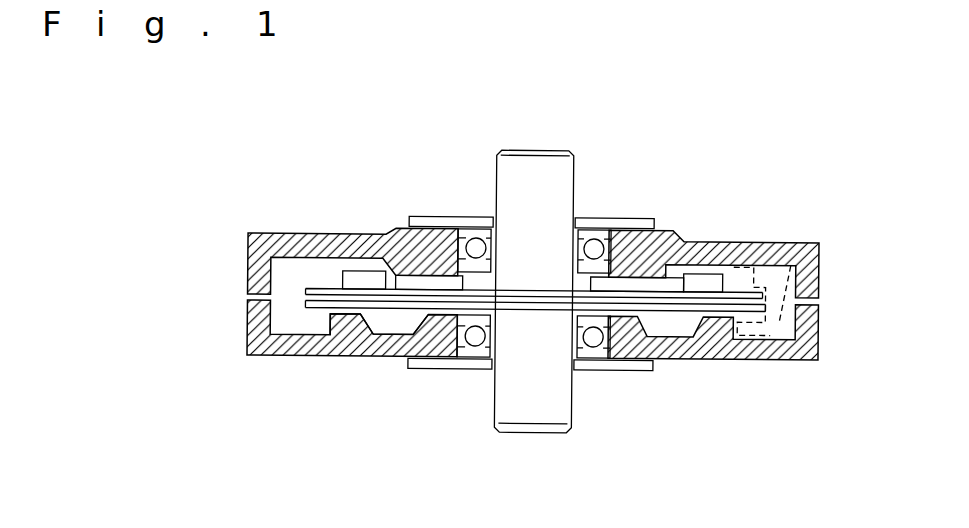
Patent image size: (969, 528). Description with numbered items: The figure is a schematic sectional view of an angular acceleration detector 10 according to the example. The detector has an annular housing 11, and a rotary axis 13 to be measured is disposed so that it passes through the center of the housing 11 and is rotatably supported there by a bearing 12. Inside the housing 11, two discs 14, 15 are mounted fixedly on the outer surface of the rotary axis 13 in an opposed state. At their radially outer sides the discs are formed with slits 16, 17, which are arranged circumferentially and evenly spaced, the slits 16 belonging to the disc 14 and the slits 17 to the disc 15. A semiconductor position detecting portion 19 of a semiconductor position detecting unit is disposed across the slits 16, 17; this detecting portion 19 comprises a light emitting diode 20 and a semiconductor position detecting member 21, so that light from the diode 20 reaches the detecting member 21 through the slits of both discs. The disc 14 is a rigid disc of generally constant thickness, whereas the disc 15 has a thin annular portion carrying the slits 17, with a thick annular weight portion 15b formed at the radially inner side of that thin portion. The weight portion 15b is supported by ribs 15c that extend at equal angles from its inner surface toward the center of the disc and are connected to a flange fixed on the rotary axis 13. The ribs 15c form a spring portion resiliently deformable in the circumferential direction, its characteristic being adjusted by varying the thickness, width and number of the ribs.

The angular acceleration detector 10 is at (216, 236).
The annular housing 11 is at (260, 233).
The bearing 12 is at (474, 236).
The rotary axis 13 is at (558, 420).
The disc 14 is at (384, 334).
The disc 15 is at (390, 275).
The thick annular weight portion 15b is at (703, 290).
The ribs 15c is at (676, 293).
The slits 16 is at (322, 318).
The slits 17 is at (327, 287).
The semiconductor position detecting portion 19 is at (818, 134).
The light emitting diode 20 is at (745, 250).
The semiconductor position detecting member 21 is at (791, 265).